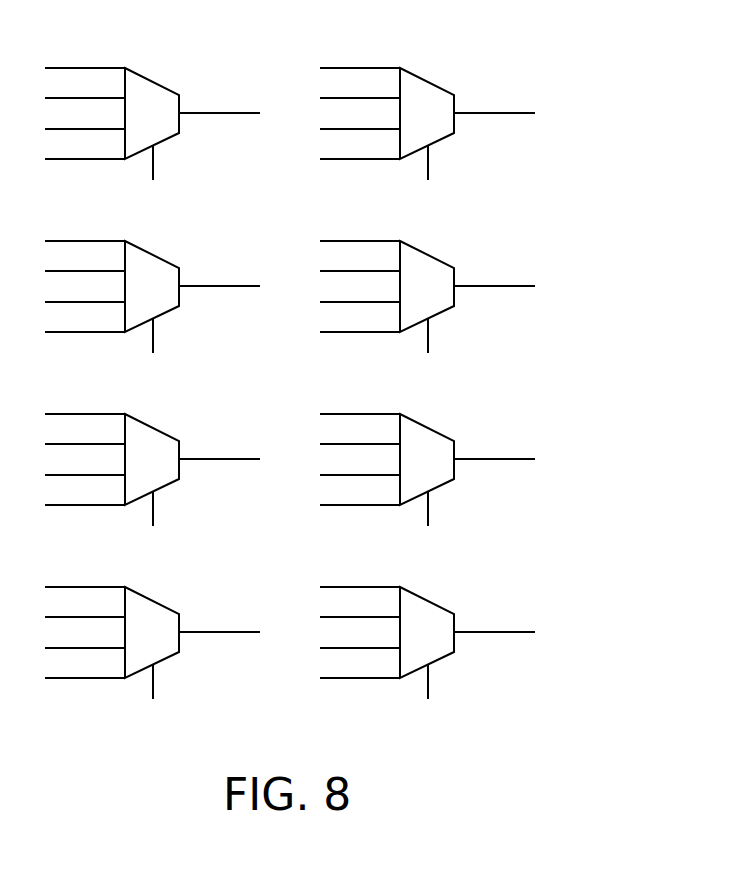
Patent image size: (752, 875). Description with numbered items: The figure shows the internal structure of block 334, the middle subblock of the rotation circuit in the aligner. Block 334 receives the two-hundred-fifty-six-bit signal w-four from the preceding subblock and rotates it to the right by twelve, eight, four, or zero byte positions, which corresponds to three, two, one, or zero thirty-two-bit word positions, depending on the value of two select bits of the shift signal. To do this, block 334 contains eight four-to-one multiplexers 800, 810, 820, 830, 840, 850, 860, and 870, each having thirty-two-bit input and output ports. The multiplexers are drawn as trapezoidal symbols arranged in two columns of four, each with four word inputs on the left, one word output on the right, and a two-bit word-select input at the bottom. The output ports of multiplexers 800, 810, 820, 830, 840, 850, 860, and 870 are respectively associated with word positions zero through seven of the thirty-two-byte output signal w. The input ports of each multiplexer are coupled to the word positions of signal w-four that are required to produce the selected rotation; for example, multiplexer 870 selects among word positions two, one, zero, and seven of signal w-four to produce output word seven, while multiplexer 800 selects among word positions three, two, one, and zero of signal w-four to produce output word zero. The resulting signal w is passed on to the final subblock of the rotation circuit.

The block 334 is at (590, 293).
The 4:1 multiplexer 800 is at (427, 635).
The 4:1 multiplexer 810 is at (427, 462).
The 4:1 multiplexer 820 is at (427, 289).
The 4:1 multiplexer 830 is at (427, 116).
The 4:1 multiplexer 840 is at (152, 635).
The 4:1 multiplexer 850 is at (152, 462).
The 4:1 multiplexer 860 is at (152, 289).
The 4:1 multiplexer 870 is at (153, 82).